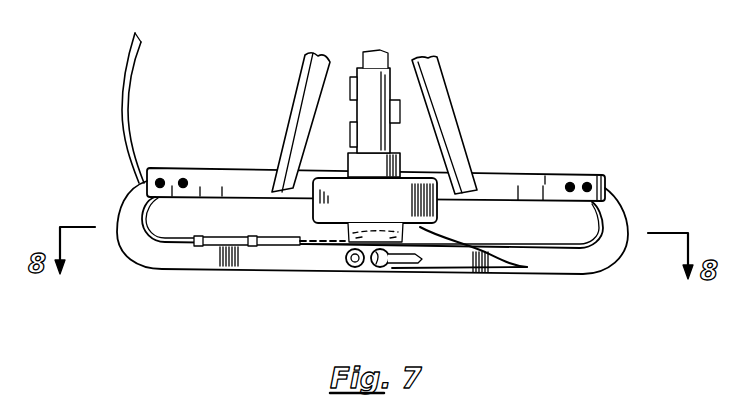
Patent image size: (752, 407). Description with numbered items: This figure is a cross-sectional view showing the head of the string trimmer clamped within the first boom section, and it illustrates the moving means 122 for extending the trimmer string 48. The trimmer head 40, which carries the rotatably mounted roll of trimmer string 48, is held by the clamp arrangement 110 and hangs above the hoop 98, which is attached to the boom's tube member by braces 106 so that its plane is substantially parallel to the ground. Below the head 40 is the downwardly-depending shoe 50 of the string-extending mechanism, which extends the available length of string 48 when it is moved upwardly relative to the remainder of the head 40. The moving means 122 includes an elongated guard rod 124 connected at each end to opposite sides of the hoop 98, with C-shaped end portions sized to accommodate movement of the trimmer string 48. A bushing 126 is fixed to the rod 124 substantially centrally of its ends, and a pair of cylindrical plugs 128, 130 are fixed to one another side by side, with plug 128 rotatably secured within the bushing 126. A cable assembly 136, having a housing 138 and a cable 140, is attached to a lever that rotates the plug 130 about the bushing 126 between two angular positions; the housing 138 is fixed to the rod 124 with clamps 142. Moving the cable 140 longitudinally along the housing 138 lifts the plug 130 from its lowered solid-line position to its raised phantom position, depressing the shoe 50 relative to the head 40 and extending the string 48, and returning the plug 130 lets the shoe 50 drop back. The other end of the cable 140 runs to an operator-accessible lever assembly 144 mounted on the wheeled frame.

The trimmer head 40 is at (410, 208).
The trimmer string 48 is at (503, 256).
The shoe 50 is at (313, 227).
The hoop 98 is at (525, 173).
The brace 106 is at (303, 63).
The clamp arrangement 110 is at (399, 137).
The moving means 122 is at (301, 310).
The guard rod 124 is at (560, 267).
The bushing 126 is at (368, 268).
The cylindrical plug 128 is at (352, 267).
The cylindrical plug 130 is at (392, 272).
The cable assembly 136 is at (108, 165).
The cable housing 138 is at (131, 70).
The cable 140 is at (135, 33).
The clamp 142 is at (198, 237).
The lever assembly 144 is at (448, 270).